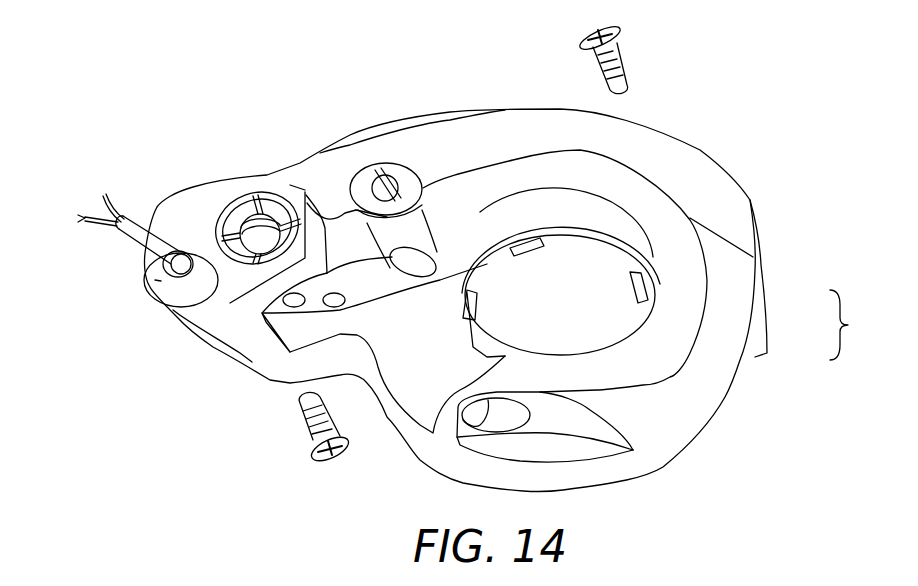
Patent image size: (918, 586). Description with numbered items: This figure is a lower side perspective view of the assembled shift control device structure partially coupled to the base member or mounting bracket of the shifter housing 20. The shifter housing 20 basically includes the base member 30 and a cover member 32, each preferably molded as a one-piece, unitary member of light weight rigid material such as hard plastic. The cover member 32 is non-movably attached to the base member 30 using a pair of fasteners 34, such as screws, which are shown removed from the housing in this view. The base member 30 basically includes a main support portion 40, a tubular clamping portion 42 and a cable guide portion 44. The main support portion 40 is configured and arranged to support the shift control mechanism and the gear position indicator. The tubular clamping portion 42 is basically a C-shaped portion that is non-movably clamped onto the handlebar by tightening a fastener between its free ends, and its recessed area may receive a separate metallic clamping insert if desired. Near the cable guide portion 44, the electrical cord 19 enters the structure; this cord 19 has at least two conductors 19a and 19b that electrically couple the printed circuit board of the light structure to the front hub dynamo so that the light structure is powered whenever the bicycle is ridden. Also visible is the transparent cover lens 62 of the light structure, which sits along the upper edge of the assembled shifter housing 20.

The electrical cord 19 is at (103, 208).
The conductor 19a is at (93, 223).
The conductor 19b is at (103, 203).
The shifter housing 20 is at (854, 325).
The base member 30 is at (747, 397).
The cover member 32 is at (772, 242).
The fasteners 34 is at (630, 63).
The main support portion 40 is at (493, 185).
The tubular clamping portion 42 is at (653, 397).
The cable guide portion 44 is at (200, 310).
The transparent cover lens 62 is at (366, 127).